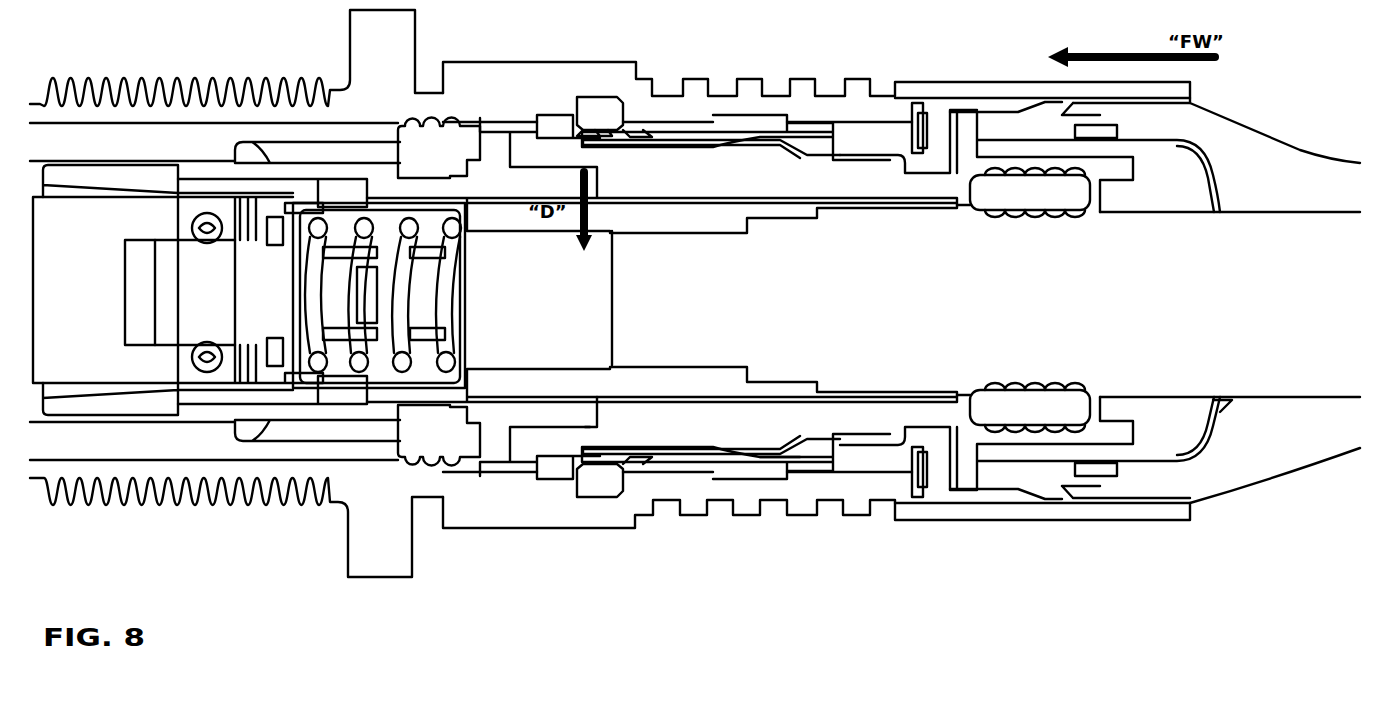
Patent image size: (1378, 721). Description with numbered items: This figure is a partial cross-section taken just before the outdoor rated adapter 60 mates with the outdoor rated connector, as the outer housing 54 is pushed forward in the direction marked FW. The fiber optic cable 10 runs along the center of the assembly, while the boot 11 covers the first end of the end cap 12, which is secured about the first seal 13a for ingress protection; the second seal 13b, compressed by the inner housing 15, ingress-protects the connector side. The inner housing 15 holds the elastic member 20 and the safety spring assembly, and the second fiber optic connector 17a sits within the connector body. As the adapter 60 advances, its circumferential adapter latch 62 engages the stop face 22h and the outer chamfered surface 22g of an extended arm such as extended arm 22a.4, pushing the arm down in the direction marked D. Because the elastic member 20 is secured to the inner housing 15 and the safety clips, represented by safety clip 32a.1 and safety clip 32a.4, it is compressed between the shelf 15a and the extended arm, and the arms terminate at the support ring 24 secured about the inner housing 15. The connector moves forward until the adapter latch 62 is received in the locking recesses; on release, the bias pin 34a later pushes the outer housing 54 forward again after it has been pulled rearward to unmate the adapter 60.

The fiber optic cable 10 is at (1270, 311).
The boot 11 is at (1280, 193).
The end cap 12 is at (1185, 443).
The first seal 13a is at (447, 448).
The second seal 13b is at (1050, 201).
The inner housing 15 is at (548, 176).
The shelf 15a is at (587, 428).
The second fiber optic connector 17a is at (90, 287).
The elastic member 20 is at (684, 131).
The outer chamfered surface 22g is at (596, 132).
The stop face 22h is at (630, 132).
The extended arm 22a.4 is at (676, 462).
The support ring 24 is at (775, 460).
The safety clip 32a.1 is at (621, 152).
The safety clip 32a.4 is at (595, 452).
The bias pin 34a is at (926, 128).
The outer housing 54 is at (862, 106).
The outdoor rated adapter 60 is at (392, 56).
The adapter latch 62 is at (572, 108).